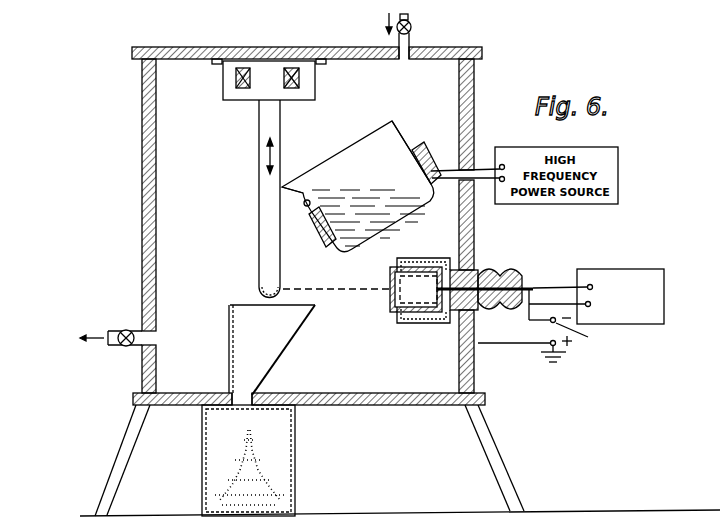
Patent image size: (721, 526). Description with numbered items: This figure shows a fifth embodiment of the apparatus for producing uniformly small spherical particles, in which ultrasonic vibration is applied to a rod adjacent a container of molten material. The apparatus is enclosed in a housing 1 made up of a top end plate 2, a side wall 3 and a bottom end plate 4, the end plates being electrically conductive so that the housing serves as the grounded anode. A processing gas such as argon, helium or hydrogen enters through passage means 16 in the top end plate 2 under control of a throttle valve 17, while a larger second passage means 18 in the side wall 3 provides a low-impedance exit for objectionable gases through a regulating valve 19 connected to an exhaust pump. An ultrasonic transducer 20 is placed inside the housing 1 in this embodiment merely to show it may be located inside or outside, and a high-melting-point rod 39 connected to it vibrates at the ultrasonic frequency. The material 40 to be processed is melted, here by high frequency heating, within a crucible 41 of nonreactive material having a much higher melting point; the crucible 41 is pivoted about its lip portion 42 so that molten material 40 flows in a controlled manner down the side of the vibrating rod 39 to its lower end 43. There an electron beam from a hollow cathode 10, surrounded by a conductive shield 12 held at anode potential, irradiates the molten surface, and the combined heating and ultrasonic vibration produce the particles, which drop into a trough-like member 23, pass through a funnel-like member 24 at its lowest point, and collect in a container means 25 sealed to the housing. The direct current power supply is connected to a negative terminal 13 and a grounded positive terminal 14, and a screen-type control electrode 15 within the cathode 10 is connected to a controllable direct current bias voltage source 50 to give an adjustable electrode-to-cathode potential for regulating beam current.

The housing 1 is at (142, 170).
The top end plate 2 is at (132, 52).
The side wall 3 is at (142, 98).
The bottom end plate 4 is at (134, 400).
The cathode 10 is at (390, 279).
The shield 12 is at (416, 258).
The terminal 13 is at (569, 337).
The terminal 14 is at (550, 346).
The control electrode 15 is at (466, 289).
The passage means 16 is at (404, 52).
The throttle valve 17 is at (412, 28).
The second passage means 18 is at (150, 337).
The regulating valve 19 is at (126, 330).
The ultrasonic transducer 20 is at (223, 88).
The trough-like member 23 is at (287, 347).
The funnel-like member 24 is at (246, 401).
The container means 25 is at (296, 465).
The rod 39 is at (259, 133).
The material 40 is at (403, 202).
The crucible 41 is at (402, 135).
The lip portion 42 is at (288, 185).
The lower end 43 is at (262, 283).
The direct current bias voltage source 50 is at (615, 270).